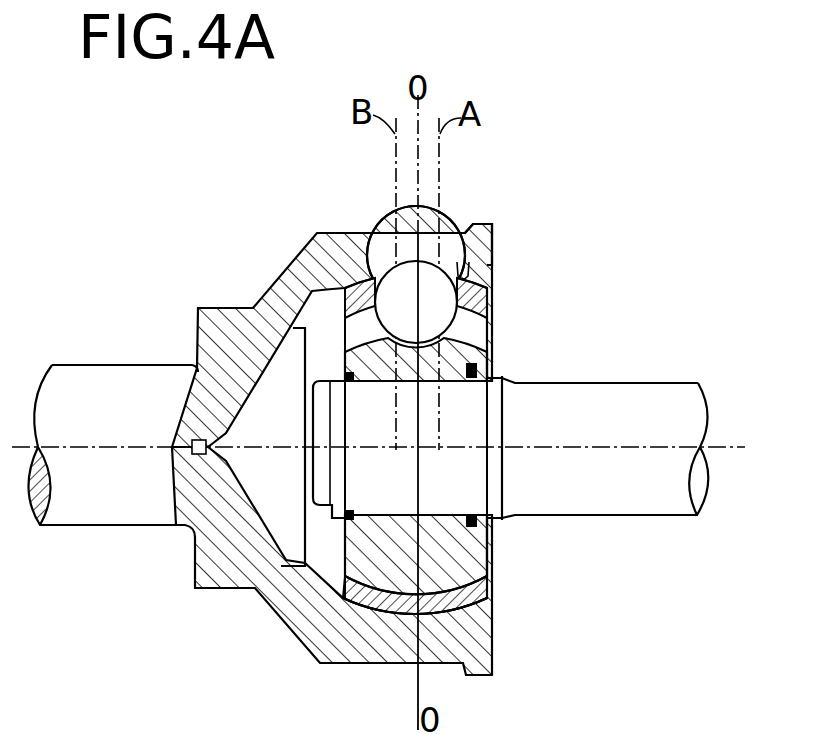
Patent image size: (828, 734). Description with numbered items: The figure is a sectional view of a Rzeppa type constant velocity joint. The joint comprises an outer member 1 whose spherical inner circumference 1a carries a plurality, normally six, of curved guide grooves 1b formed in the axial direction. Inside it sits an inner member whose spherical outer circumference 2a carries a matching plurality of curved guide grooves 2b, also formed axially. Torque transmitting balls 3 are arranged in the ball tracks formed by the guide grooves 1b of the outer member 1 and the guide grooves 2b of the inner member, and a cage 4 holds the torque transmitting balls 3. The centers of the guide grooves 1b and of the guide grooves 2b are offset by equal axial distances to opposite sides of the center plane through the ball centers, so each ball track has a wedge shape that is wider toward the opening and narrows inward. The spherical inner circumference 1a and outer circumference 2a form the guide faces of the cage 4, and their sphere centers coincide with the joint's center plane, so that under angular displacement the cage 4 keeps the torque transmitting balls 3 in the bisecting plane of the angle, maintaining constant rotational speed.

The outer member 1 is at (247, 303).
The spherical inner circumference 1a is at (365, 578).
The curved guide grooves 1b is at (463, 232).
The spherical outer circumference 2a is at (493, 623).
The curved guide grooves 2b is at (487, 343).
The torque transmitting balls 3 is at (366, 234).
The cage 4 is at (481, 293).